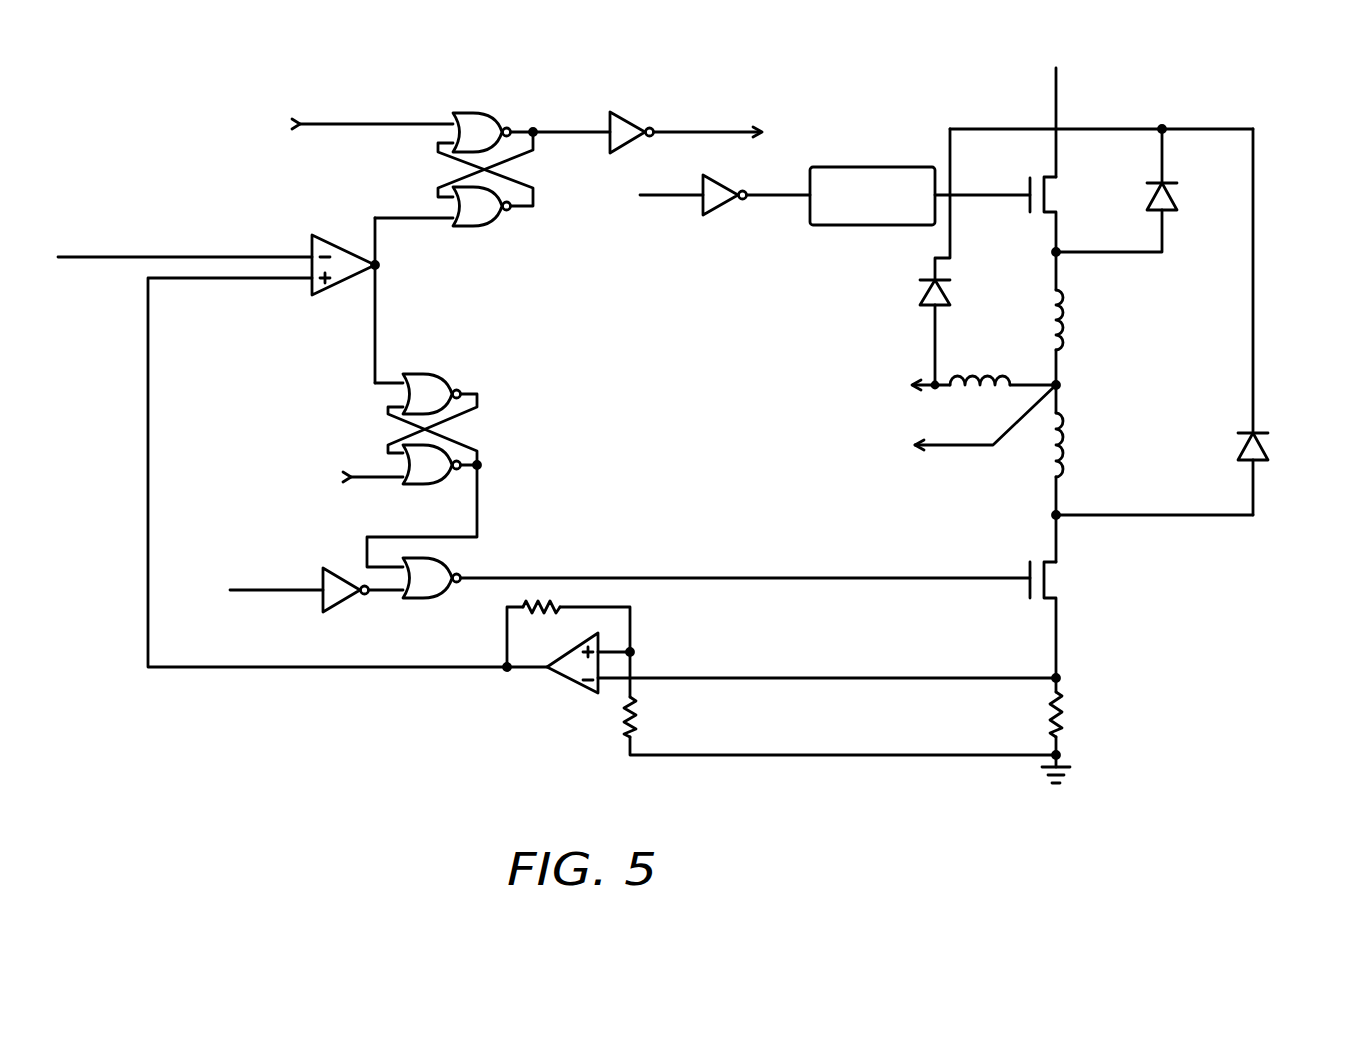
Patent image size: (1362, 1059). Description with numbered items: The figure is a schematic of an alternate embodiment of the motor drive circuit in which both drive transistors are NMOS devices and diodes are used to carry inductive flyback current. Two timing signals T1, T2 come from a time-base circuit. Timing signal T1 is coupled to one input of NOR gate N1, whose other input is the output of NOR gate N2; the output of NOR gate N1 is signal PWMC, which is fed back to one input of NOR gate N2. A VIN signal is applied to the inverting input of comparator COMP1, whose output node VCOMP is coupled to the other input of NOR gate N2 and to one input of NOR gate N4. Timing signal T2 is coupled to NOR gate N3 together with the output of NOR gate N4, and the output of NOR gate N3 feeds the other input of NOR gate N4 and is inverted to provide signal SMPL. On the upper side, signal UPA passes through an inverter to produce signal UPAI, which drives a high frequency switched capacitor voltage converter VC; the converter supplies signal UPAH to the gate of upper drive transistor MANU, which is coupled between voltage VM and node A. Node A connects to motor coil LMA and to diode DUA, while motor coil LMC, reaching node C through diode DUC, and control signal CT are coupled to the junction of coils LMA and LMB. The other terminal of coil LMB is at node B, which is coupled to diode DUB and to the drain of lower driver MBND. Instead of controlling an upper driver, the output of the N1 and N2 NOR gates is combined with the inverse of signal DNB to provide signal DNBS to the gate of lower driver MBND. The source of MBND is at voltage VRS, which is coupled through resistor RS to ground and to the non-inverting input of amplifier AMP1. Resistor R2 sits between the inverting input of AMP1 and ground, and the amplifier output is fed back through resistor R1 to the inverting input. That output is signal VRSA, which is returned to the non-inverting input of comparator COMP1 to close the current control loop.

The timing signal T2 is at (353, 126).
The NOR gate N3 is at (524, 143).
The NOR gate N4 is at (485, 198).
The sample signal SMPL is at (718, 132).
The UPA signal UPA is at (669, 195).
The UPAI signal UPAI is at (804, 193).
The voltage converter VC is at (872, 196).
The UPAH signal UPAH is at (1014, 193).
The voltage VM is at (1101, 109).
The upper drive transistor MANU is at (1071, 214).
The node A is at (1096, 238).
The diode DUA is at (1190, 169).
The diode DUC is at (960, 257).
The node C is at (914, 386).
The motor coil LMC is at (972, 366).
The motor coil LMA is at (1071, 318).
The control signal CT is at (968, 422).
The motor coil LMB is at (1070, 453).
The node B is at (1141, 533).
The diode DUB is at (1280, 322).
The lower drive transistor MBND is at (1069, 620).
The DNBS signal DNBS is at (917, 578).
The voltage VRS is at (1055, 646).
The resistor RS is at (1066, 730).
The comparator COMP1 is at (342, 251).
The VIN signal VIN is at (165, 258).
The node VCOMP is at (377, 297).
The NOR gate N2 is at (432, 404).
The NOR gate N1 is at (432, 458).
The timing signal T1 is at (357, 477).
The PWMC signal PWMC is at (480, 476).
The DNB signal DNB is at (319, 585).
The resistor R1 is at (568, 624).
The amplifier AMP1 is at (563, 677).
The resistor R2 is at (840, 703).
The VRSA signal VRSA is at (362, 668).